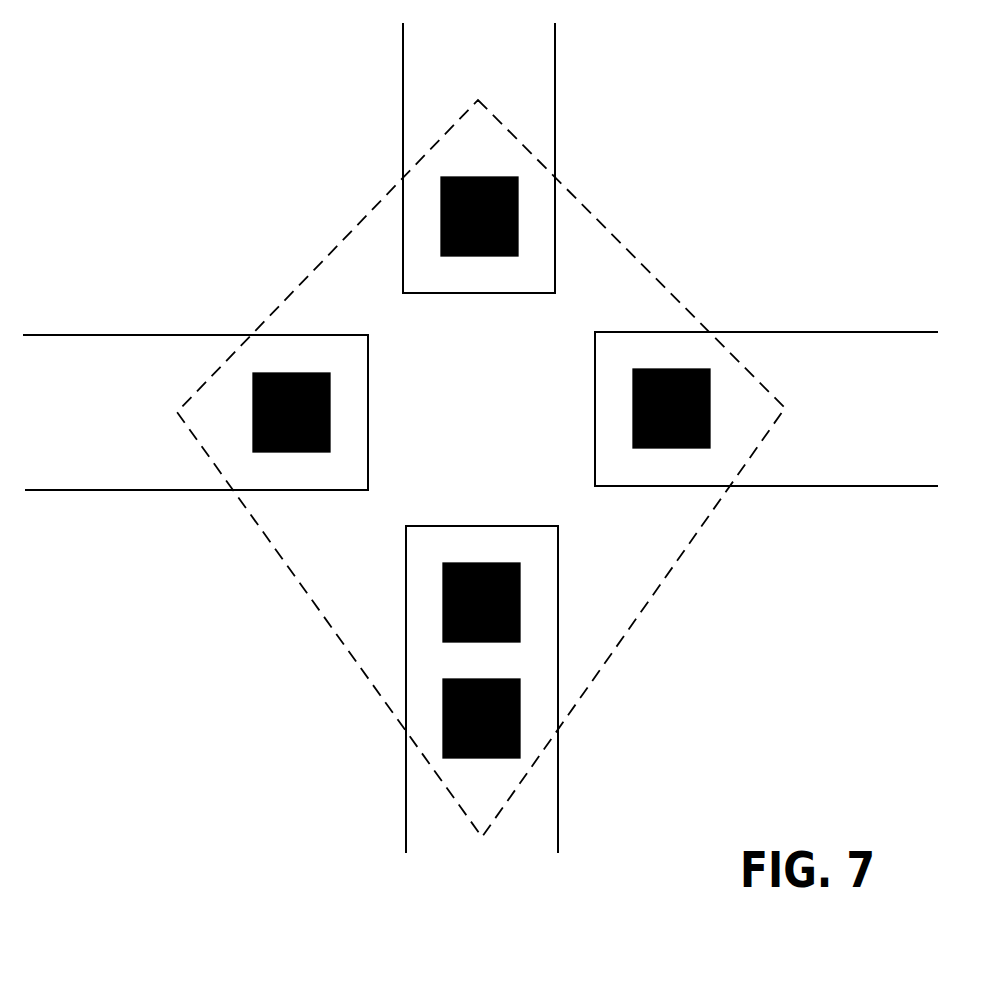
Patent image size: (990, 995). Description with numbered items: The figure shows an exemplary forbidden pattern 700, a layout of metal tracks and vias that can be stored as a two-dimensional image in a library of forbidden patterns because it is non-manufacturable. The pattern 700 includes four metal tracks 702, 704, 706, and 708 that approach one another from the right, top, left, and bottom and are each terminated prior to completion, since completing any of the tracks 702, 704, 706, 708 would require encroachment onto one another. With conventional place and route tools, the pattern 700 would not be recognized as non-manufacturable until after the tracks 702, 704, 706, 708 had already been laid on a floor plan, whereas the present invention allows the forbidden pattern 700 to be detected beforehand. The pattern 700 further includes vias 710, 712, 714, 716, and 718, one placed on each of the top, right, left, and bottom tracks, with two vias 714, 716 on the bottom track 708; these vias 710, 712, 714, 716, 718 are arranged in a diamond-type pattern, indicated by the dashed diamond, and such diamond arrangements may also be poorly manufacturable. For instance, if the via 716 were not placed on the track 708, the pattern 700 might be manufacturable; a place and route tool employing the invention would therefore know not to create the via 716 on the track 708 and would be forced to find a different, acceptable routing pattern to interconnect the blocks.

The forbidden pattern 700 is at (772, 160).
The metal track 702 is at (900, 486).
The metal track 704 is at (402, 97).
The metal track 706 is at (100, 335).
The metal track 708 is at (406, 797).
The via 710 is at (441, 225).
The via 712 is at (672, 369).
The via 714 is at (522, 598).
The via 716 is at (445, 700).
The via 718 is at (330, 412).